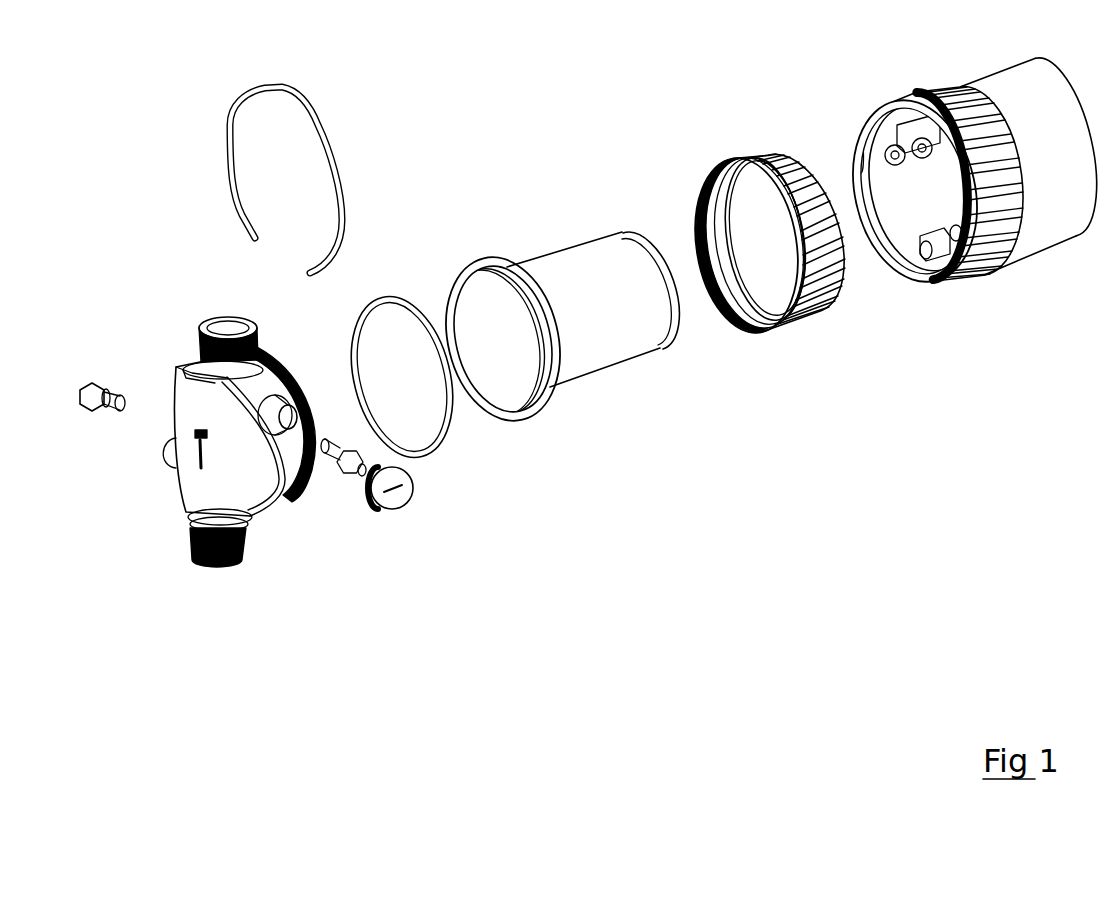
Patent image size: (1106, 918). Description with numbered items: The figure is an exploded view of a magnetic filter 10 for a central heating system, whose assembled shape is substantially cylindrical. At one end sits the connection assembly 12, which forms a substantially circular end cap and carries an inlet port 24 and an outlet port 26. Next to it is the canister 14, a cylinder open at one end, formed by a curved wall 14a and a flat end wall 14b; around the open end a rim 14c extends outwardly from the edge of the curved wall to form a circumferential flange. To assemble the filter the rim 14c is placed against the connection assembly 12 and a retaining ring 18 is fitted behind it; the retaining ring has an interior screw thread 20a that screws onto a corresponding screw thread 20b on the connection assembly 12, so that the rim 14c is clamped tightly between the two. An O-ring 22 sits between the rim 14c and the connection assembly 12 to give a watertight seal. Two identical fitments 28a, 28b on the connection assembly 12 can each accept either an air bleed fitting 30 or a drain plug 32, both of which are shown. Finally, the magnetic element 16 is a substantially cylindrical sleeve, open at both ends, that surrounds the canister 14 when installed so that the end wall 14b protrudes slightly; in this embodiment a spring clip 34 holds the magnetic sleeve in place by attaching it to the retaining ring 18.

The magnetic filter 10 is at (852, 565).
The connection assembly 12 is at (249, 447).
The canister 14 is at (560, 311).
The curved wall 14a is at (575, 270).
The flat end wall 14b is at (667, 250).
The rim 14c is at (470, 268).
The magnetic element 16 is at (1033, 230).
The retaining ring 18 is at (769, 298).
The interior screw thread 20a is at (730, 313).
The screw thread 20b is at (270, 350).
The O-ring 22 is at (392, 297).
The inlet port 24 is at (217, 562).
The outlet port 26 is at (224, 312).
The fitment 28a is at (302, 412).
The fitment 28b is at (165, 447).
The air bleed fitting 30 is at (338, 478).
The drain plug 32 is at (86, 382).
The retaining clip 34 is at (314, 122).